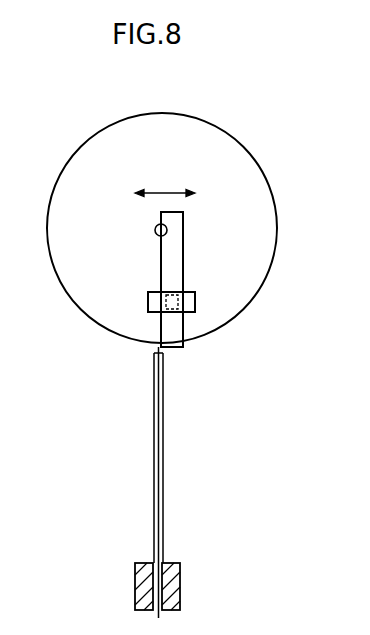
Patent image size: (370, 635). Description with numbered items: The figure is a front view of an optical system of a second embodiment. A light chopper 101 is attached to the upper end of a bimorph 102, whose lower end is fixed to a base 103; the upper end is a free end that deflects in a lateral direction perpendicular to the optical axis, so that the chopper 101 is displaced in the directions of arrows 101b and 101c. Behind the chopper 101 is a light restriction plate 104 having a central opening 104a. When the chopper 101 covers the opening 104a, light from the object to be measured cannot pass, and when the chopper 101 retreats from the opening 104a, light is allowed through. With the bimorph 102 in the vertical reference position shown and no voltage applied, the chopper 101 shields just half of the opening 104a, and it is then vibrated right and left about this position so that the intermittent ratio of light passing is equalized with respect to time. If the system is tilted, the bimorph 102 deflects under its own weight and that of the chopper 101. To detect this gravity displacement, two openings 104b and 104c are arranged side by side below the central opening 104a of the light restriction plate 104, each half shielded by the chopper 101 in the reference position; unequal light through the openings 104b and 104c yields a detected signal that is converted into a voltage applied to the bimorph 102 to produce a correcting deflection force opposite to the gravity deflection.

The light chopper 101 is at (183, 262).
The arrow 101b is at (132, 192).
The arrow 101c is at (226, 192).
The bimorph 102 is at (163, 441).
The base 103 is at (170, 562).
The light restriction plate 104 is at (262, 170).
The central opening 104a is at (155, 232).
The opening 104b is at (148, 298).
The opening 104c is at (195, 298).